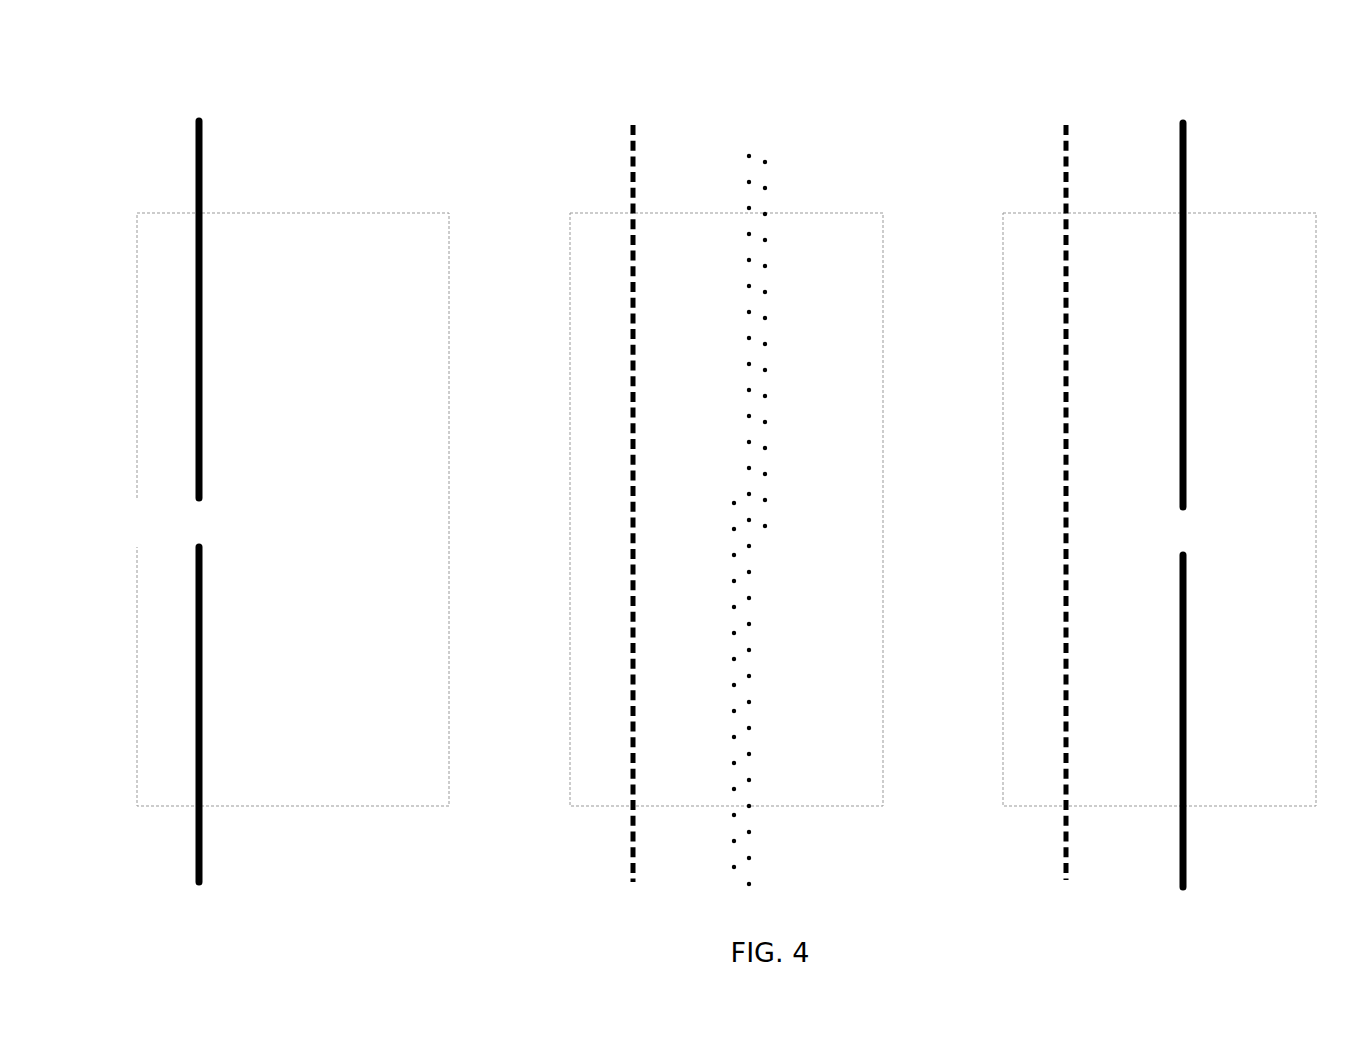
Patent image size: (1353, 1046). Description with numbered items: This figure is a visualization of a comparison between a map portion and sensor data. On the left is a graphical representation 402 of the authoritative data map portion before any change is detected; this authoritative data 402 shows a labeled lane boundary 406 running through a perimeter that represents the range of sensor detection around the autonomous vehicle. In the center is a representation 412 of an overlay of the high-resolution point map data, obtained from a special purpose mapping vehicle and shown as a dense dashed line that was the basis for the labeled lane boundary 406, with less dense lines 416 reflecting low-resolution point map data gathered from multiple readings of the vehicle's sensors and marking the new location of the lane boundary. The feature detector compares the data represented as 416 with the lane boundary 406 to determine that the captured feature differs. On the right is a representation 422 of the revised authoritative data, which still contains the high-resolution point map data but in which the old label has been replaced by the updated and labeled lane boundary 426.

The graphical representation of the authoritative data map portion 402 is at (286, 124).
The labeled lane boundary 406 is at (190, 183).
The representation of an overlay 412 is at (703, 139).
The less dense lines 416 is at (740, 431).
The representation of the revised authoritative data 422 is at (1135, 138).
The updated and labeled lane boundary 426 is at (1174, 431).